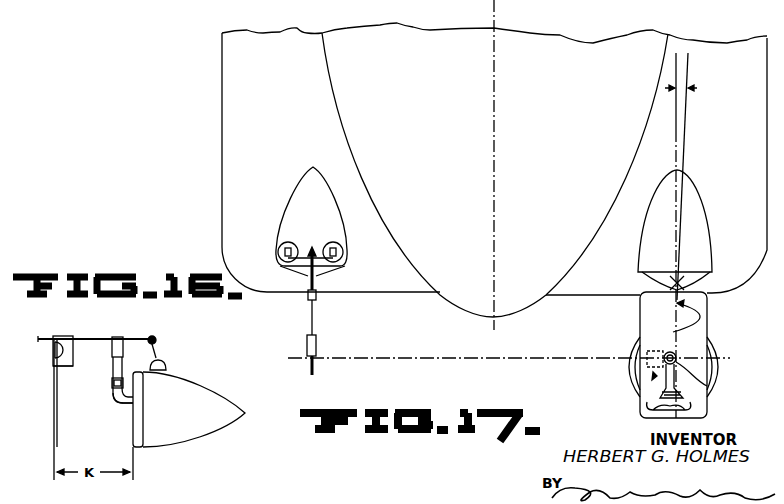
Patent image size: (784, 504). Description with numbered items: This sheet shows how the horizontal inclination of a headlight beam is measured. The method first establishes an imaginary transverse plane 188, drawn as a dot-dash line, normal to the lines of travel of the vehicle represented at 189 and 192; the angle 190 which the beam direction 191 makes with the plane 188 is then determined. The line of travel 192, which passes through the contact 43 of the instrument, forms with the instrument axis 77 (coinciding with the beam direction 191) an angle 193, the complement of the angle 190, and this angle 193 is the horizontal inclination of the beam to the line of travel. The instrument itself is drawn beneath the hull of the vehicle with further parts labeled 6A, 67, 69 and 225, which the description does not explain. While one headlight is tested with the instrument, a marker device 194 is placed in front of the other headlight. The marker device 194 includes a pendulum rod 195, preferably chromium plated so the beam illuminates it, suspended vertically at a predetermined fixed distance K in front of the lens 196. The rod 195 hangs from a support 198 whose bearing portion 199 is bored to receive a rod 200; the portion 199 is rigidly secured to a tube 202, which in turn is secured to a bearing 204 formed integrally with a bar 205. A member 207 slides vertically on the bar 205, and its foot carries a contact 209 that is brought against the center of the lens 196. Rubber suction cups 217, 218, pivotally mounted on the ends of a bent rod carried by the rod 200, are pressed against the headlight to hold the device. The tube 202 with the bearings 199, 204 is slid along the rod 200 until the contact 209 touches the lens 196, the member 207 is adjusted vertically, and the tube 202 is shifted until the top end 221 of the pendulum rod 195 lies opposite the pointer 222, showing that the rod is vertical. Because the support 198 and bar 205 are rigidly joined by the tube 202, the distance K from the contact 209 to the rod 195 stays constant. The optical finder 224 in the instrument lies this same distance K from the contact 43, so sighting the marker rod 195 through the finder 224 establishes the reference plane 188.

In FIG. 17, the bearing 6A is at (679, 360).
In FIG. 17, the contact 43 is at (681, 283).
In FIG. 17, the pedestal 67 is at (700, 412).
In FIG. 17, the base bracket 69 is at (651, 410).
In FIG. 17, the instrument axis 77 is at (684, 148).
In FIG. 17, the transverse plane 188 is at (437, 358).
In FIG. 17, the line of travel 189 is at (496, 178).
In FIG. 17, the angle 190 is at (727, 332).
In FIG. 17, the beam direction 191 is at (707, 314).
In FIG. 17, the line of travel 192 is at (675, 193).
In FIG. 17, the angle 193 is at (686, 86).
In FIG. 16, the marker device 194 is at (80, 338).
In FIG. 17, the marker device 194 is at (308, 315).
In FIG. 16, the pendulum rod 195 is at (53, 412).
In FIG. 17, the pendulum rod 195 is at (318, 348).
In FIG. 16, the lens 196 is at (133, 417).
In FIG. 16, the support 198 is at (61, 364).
In FIG. 16, the bearing portion 199 is at (70, 318).
In FIG. 16, the rod 200 is at (40, 338).
In FIG. 16, the tube 202 is at (102, 338).
In FIG. 16, the bearing 204 is at (122, 338).
In FIG. 16, the bar 205 is at (113, 352).
In FIG. 16, the member 207 is at (115, 403).
In FIG. 16, the contact 209 is at (137, 403).
In FIG. 16, the rubber suction cup 217 is at (163, 367).
In FIG. 17, the rubber suction cup 217 is at (341, 237).
In FIG. 17, the rubber suction cup 218 is at (300, 236).
In FIG. 16, the top end 221 is at (53, 355).
In FIG. 16, the pointer 222 is at (53, 347).
In FIG. 17, the optical finder 224 is at (707, 386).
In FIG. 17, the direction arrow 225 is at (657, 376).